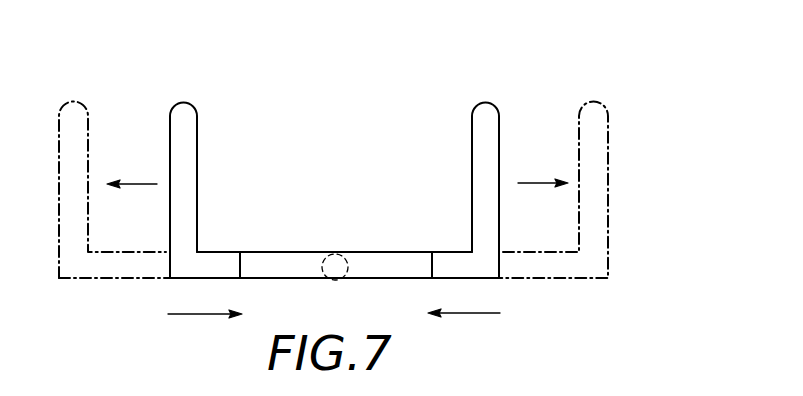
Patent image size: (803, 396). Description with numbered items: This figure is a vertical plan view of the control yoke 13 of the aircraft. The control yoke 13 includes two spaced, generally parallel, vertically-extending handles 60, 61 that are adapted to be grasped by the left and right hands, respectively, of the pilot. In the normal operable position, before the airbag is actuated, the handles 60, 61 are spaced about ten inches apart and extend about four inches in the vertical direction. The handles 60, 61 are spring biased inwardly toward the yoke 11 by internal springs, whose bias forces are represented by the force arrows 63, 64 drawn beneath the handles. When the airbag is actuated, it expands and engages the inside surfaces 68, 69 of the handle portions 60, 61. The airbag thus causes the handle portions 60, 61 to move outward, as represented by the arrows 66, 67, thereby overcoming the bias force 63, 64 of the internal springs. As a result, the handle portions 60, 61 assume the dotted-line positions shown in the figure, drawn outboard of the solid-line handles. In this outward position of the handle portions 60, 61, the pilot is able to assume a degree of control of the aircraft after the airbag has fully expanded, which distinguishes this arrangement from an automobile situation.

The yoke 11 is at (344, 257).
The control yoke 13 is at (632, 158).
The handle 60 is at (183, 142).
The handle 61 is at (478, 122).
The force arrow 63 is at (203, 314).
The force arrow 64 is at (476, 313).
The arrow 66 is at (140, 184).
The arrow 67 is at (530, 183).
The inside surface 68 is at (197, 185).
The inside surface 69 is at (477, 192).